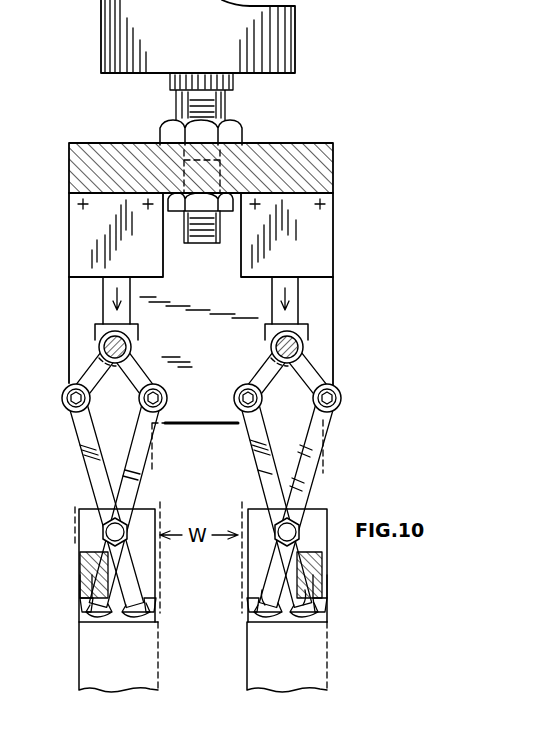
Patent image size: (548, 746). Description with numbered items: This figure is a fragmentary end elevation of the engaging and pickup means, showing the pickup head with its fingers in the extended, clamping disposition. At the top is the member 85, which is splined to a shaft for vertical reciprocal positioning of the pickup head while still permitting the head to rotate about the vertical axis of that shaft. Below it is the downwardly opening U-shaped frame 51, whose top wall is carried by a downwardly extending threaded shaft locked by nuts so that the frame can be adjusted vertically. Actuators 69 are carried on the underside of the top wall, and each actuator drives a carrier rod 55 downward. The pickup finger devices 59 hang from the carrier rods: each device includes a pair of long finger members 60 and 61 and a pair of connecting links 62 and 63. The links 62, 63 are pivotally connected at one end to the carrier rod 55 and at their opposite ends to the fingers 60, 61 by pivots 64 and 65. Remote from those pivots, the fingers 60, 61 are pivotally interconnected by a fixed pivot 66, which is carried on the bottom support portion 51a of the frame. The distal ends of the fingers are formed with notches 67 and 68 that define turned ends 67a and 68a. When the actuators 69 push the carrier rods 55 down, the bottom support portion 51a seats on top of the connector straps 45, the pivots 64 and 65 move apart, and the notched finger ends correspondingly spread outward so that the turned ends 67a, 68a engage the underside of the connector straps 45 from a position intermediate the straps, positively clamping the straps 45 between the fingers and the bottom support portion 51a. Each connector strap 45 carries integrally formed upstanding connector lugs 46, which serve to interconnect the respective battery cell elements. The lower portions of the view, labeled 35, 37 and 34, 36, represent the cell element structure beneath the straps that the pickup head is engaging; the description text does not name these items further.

The splined member 85 is at (278, 40).
The U-shaped frame 51 is at (246, 145).
The bottom support portion 51a is at (300, 522).
The actuator 69 is at (87, 220).
The carrier rod 55 is at (201, 362).
The connecting link 63 is at (262, 365).
The connecting link 62 is at (310, 372).
The pivot 65 is at (245, 398).
The pivot 64 is at (330, 406).
The pickup finger device 59 is at (61, 427).
The long finger member 60 is at (316, 462).
The long finger member 61 is at (258, 463).
The fixed pivot 66 is at (112, 532).
The notch 67 is at (262, 596).
The turned end 67a is at (86, 608).
The notch 68 is at (318, 604).
The turned end 68a is at (140, 612).
The connector strap 45 is at (250, 608).
The connector lug 46 is at (317, 590).
The workpiece 35 is at (80, 657).
The workpiece 37 is at (96, 640).
The workpiece 34 is at (327, 657).
The workpiece 36 is at (310, 650).